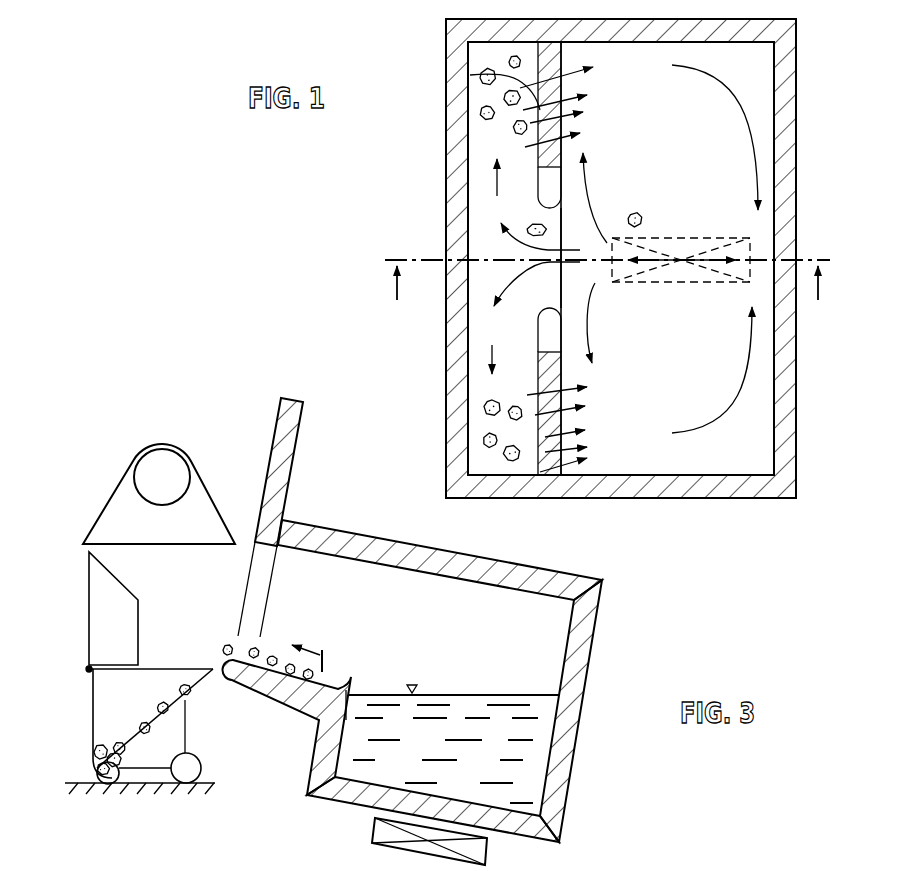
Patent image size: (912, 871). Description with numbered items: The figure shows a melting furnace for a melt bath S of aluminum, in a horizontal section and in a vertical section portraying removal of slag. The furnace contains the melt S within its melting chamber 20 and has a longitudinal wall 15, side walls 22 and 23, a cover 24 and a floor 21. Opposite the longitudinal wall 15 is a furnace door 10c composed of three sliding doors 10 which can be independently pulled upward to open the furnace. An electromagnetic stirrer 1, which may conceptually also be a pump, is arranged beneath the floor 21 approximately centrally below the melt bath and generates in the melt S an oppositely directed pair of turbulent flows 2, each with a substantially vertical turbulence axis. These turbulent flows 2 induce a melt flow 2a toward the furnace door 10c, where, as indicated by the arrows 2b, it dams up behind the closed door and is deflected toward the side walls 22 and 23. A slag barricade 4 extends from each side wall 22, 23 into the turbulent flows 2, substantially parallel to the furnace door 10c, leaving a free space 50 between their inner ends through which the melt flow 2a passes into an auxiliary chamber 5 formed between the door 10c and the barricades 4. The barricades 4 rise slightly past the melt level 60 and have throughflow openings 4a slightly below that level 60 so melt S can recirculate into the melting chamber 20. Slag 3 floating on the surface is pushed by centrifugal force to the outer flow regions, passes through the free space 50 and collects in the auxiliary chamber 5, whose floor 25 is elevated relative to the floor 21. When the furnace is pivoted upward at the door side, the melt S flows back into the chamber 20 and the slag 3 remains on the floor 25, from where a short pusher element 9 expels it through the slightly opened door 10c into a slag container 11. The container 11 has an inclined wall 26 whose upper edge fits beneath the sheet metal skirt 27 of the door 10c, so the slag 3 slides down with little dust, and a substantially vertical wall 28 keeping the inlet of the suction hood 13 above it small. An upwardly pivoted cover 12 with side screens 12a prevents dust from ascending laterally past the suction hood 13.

In FIG. 1, the electromagnetic stirrer 1 is at (675, 284).
In FIG. 3, the electromagnetic stirrer 1 is at (487, 855).
In FIG. 1, the turbulent flows 2 is at (585, 200).
In FIG. 1, the melt flow 2a is at (512, 274).
In FIG. 1, the arrows 2b is at (497, 176).
In FIG. 1, the slag 3 is at (480, 90).
In FIG. 3, the slag 3 is at (283, 652).
In FIG. 1, the slag barricade 4 is at (548, 183).
In FIG. 3, the slag barricade 4 is at (346, 692).
In FIG. 1, the throughflow openings 4a is at (466, 57).
In FIG. 1, the auxiliary chamber 5 is at (538, 75).
In FIG. 3, the auxiliary chamber 5 is at (290, 695).
In FIG. 3, the slag pusher element 9 is at (324, 668).
In FIG. 1, the sliding doors 10 is at (462, 137).
In FIG. 3, the sliding doors 10 is at (290, 447).
In FIG. 1, the furnace door 10c is at (444, 243).
In FIG. 3, the furnace door 10c is at (260, 438).
In FIG. 3, the slag container 11 is at (100, 722).
In FIG. 3, the cover 12 is at (89, 617).
In FIG. 3, the side screens 12a is at (140, 618).
In FIG. 3, the suction hood 13 is at (197, 512).
In FIG. 1, the longitudinal wall 15 is at (786, 436).
In FIG. 3, the longitudinal wall 15 is at (578, 683).
In FIG. 1, the melting chamber 20 is at (732, 169).
In FIG. 3, the melting chamber 20 is at (533, 729).
In FIG. 3, the furnace floor 21 is at (345, 790).
In FIG. 1, the side wall 22 is at (737, 488).
In FIG. 1, the side wall 23 is at (650, 34).
In FIG. 3, the cover 24 is at (480, 568).
In FIG. 3, the floor of the auxiliary chamber 25 is at (305, 698).
In FIG. 3, the wall 26 is at (194, 687).
In FIG. 3, the sheet metal skirt 27 is at (213, 663).
In FIG. 3, the wall 28 is at (93, 698).
In FIG. 1, the free space 50 is at (578, 258).
In FIG. 3, the melt level 60 is at (474, 694).
In FIG. 1, the melt bath S is at (667, 458).
In FIG. 3, the melt bath S is at (515, 772).